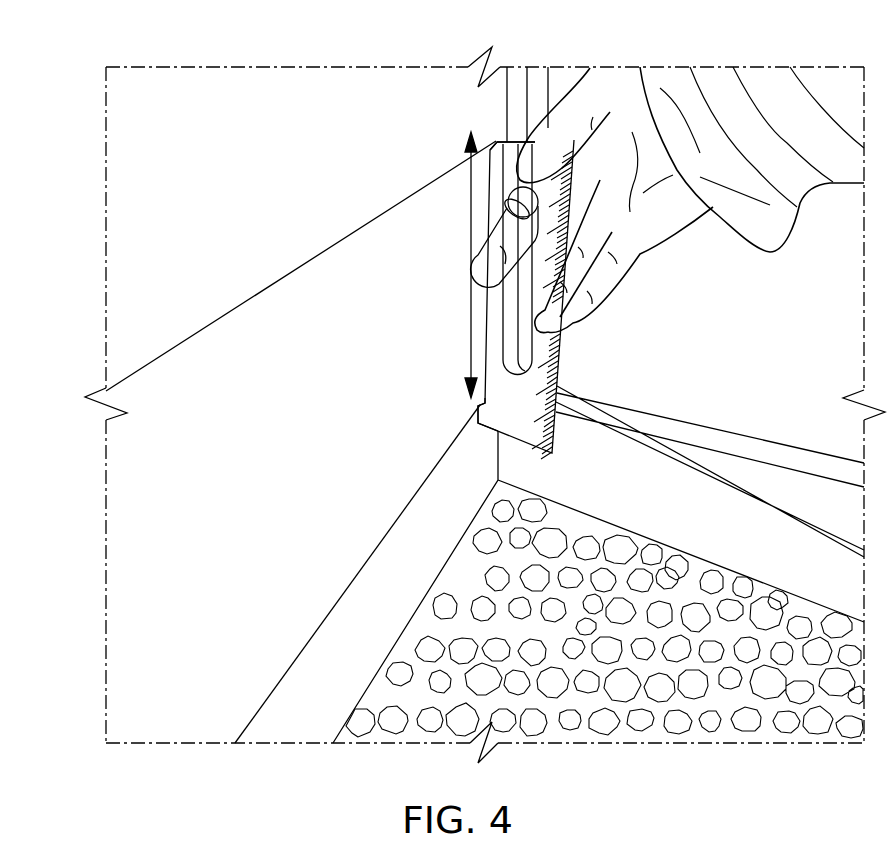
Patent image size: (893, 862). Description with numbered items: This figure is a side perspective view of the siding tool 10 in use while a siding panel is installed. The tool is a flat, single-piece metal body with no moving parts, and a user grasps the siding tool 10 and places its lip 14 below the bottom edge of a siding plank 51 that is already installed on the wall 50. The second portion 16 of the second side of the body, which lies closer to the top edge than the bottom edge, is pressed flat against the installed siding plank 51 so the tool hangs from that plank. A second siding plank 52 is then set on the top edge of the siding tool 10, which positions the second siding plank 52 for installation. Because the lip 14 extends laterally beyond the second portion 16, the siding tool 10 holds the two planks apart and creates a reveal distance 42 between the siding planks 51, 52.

The siding tool 10 is at (590, 352).
The lip 14 is at (478, 404).
The second portion 16 is at (490, 186).
The reveal distance 42 is at (469, 261).
The wall 50 is at (318, 705).
The siding plank 51 is at (158, 562).
The second siding plank 52 is at (168, 253).